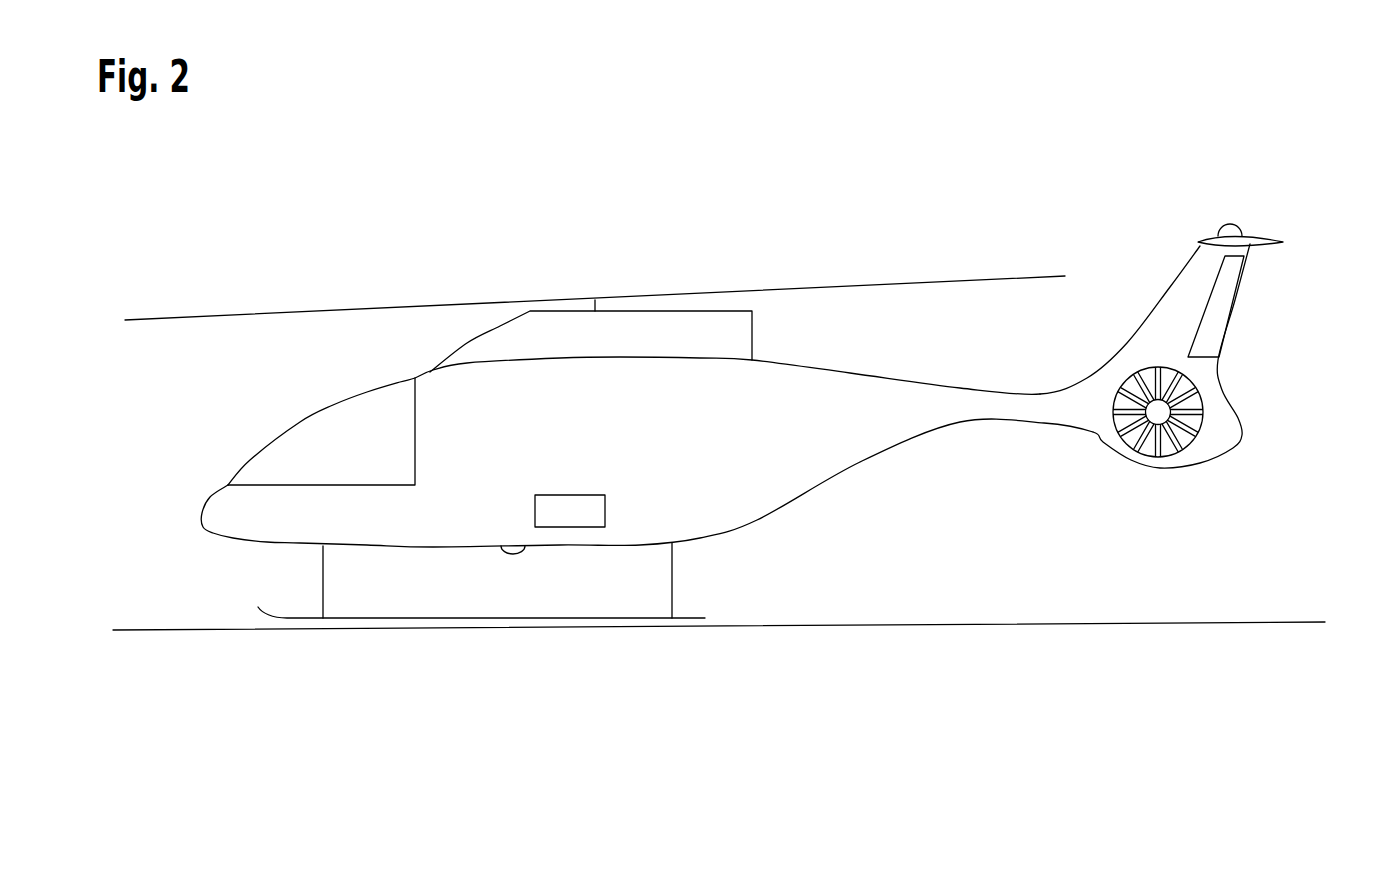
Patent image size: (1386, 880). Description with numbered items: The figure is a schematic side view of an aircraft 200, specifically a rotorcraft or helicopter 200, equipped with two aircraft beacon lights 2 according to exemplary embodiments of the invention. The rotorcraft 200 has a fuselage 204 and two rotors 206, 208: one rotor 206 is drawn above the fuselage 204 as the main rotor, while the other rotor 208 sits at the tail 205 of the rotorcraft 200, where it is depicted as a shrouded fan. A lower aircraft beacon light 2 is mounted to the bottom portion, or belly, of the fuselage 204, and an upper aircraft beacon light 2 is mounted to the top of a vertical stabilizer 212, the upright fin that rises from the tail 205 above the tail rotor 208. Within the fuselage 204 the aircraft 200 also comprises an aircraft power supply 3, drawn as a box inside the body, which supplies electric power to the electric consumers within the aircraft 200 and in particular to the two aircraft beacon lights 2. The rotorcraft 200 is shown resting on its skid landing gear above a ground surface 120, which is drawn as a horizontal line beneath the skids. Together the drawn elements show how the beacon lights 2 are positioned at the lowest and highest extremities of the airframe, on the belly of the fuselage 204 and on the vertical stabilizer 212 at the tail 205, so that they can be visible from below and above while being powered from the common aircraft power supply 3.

The rotorcraft 200 is at (735, 422).
The aircraft beacon light 2 is at (1230, 222).
The aircraft power supply 3 is at (568, 510).
The fuselage 204 is at (647, 508).
The rotor 206 is at (1008, 254).
The vertical stabilizer 212 is at (1172, 275).
The tail 205 is at (1242, 325).
The rotor 208 is at (1199, 459).
The ground 120 is at (997, 627).